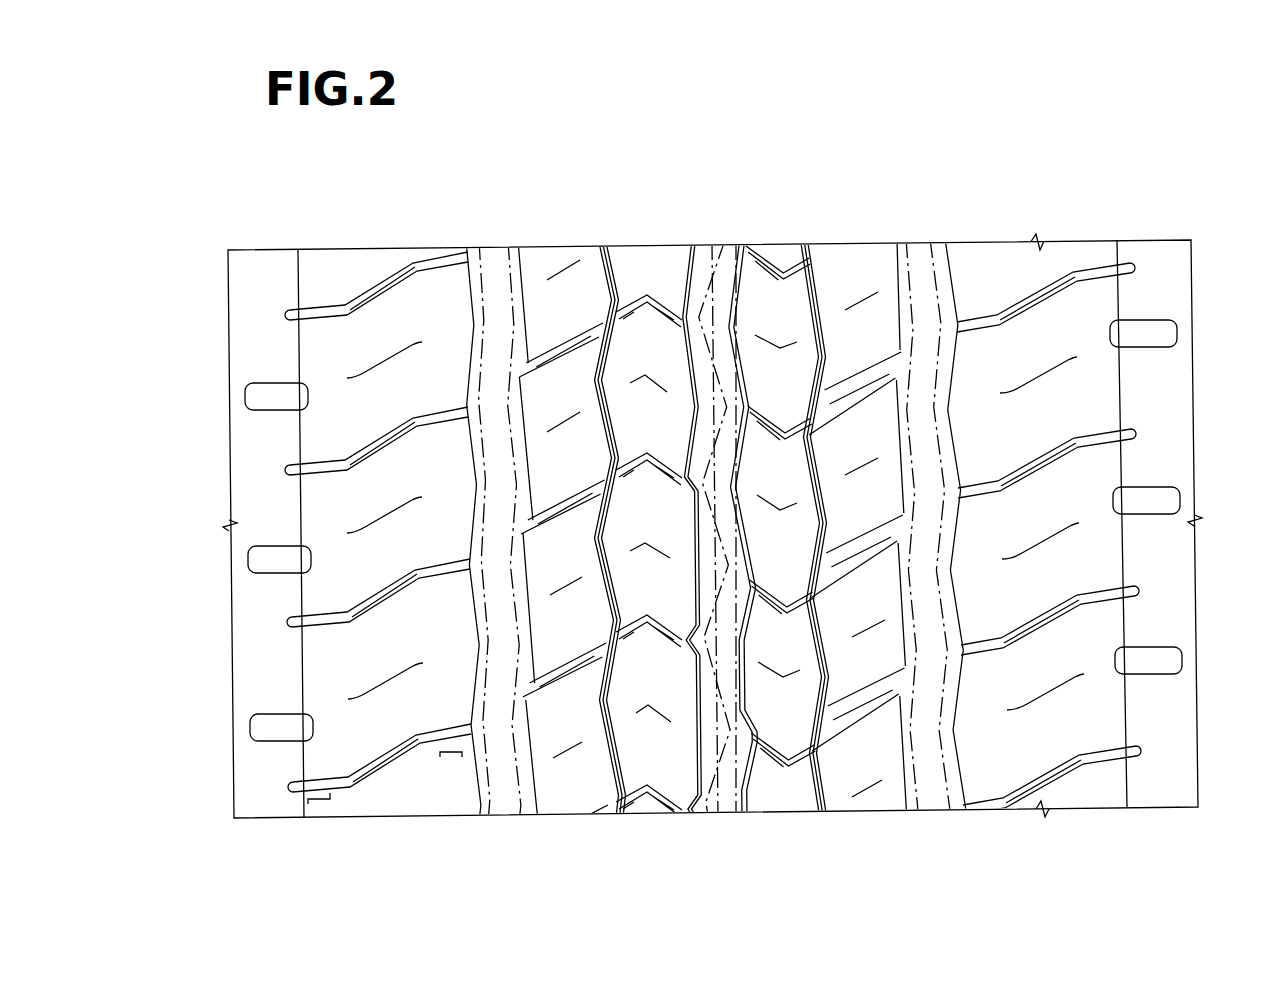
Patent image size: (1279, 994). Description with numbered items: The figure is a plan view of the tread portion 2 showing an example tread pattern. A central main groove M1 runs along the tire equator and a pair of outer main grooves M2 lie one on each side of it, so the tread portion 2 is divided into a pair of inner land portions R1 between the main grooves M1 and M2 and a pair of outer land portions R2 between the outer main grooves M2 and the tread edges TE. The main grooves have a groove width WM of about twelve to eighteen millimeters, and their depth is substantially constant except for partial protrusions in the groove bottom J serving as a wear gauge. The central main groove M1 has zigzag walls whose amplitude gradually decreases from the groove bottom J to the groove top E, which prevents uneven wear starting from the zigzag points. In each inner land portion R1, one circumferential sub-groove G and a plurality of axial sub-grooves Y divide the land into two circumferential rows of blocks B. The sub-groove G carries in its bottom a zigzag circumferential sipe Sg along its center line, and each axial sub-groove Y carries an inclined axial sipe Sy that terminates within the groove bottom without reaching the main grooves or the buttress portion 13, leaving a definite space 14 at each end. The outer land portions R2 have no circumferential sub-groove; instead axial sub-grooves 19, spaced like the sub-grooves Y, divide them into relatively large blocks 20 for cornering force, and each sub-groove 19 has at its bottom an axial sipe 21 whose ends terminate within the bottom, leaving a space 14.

The tread portion 2 is at (1118, 174).
The buttress portion 13 is at (226, 217).
The space 14 is at (385, 778).
The axial sub-groove 19 is at (327, 790).
The block 20 is at (715, 526).
The axial sipe 21 is at (713, 533).
The tread edge TE is at (297, 287).
The groove width WM is at (943, 243).
The inner land portion R1 is at (677, 192).
The outer land portion R2 is at (313, 192).
The central main groove M1 is at (720, 530).
The outer main groove M2 is at (715, 530).
The circumferential sub-groove G is at (610, 531).
The axial sub-groove Y is at (712, 552).
The axial sipe Sy is at (815, 531).
The circumferential sipe Sg is at (649, 556).
The groove bottom J is at (713, 530).
The groove top E is at (757, 246).
The block B is at (716, 528).